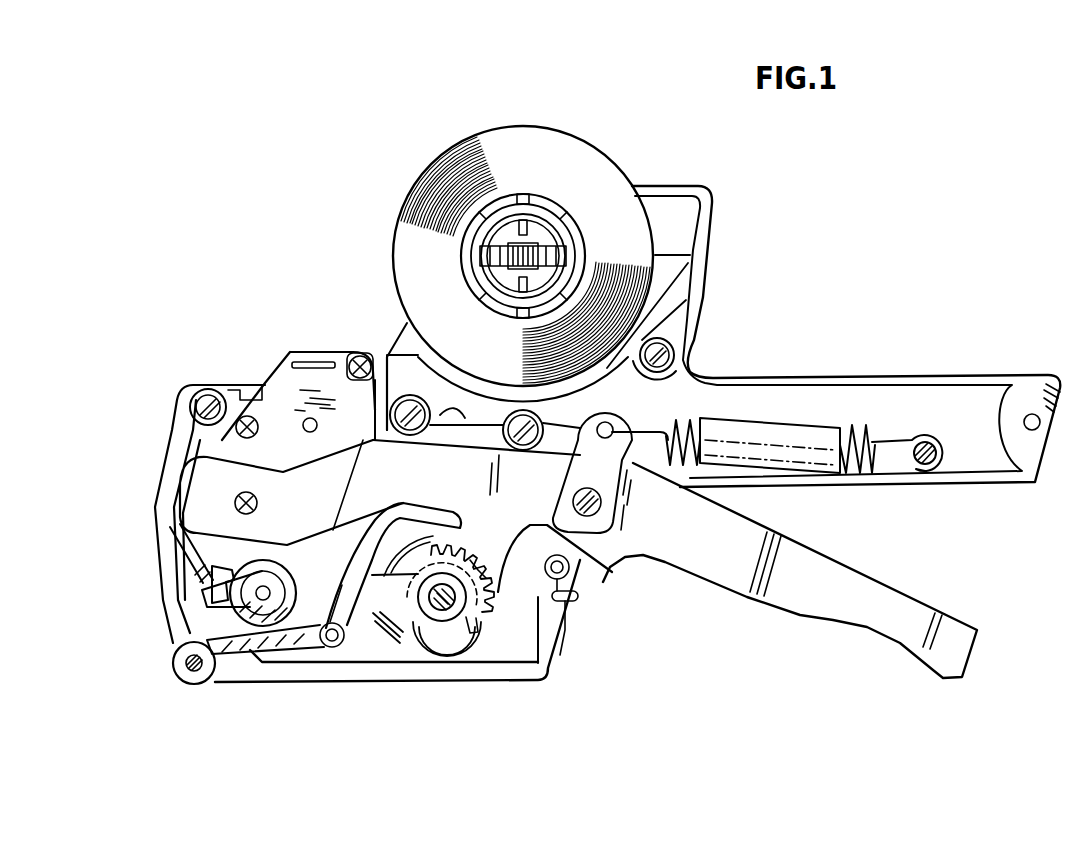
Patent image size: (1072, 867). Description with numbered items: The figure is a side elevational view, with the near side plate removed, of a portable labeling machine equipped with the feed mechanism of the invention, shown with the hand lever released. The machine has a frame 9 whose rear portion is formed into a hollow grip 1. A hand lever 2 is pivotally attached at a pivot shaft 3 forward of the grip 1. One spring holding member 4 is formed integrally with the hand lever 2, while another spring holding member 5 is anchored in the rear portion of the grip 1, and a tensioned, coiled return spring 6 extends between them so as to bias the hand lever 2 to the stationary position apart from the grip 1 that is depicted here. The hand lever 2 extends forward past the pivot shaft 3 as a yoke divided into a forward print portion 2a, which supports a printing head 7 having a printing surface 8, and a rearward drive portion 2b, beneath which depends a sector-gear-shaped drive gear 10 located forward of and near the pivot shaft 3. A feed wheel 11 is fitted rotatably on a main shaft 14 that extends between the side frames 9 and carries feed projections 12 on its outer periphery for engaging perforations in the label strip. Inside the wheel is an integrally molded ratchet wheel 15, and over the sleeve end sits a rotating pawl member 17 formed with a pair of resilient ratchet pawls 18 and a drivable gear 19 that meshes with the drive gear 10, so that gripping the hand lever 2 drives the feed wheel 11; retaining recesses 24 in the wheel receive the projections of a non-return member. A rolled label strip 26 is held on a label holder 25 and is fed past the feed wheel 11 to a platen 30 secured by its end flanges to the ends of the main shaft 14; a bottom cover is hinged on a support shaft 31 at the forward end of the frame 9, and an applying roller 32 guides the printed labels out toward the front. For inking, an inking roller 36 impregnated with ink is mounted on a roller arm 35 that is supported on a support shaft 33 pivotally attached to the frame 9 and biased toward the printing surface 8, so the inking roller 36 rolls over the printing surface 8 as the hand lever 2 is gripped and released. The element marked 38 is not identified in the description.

The hollow grip 1 is at (920, 375).
The hand lever 2 is at (865, 585).
The print portion 2a is at (279, 514).
The drive portion 2b is at (472, 516).
The pivot shaft 3 is at (597, 560).
The spring holding member 4 is at (617, 432).
The spring holding member 5 is at (935, 445).
The return spring 6 is at (770, 418).
The printing head 7 is at (303, 350).
The printing surface 8 is at (250, 562).
The frame 9 is at (242, 386).
The drive gear 10 is at (468, 542).
The feed wheel 11 is at (410, 595).
The feed projections 12 is at (357, 552).
The main shaft 14 is at (437, 613).
The ratchet wheel 15 is at (478, 632).
The rotating pawl member 17 is at (440, 545).
The ratchet pawls 18 is at (397, 502).
The drivable gear 19 is at (475, 565).
The retaining recesses 24 is at (380, 670).
The label holder 25 is at (545, 230).
The rolled label strip 26 is at (570, 150).
The platen 30 is at (305, 656).
The support shaft 31 is at (195, 684).
The applying roller 32 is at (174, 652).
The support shaft 33 is at (202, 388).
The roller arm 35 is at (183, 545).
The inking roller 36 is at (288, 586).
The stop 38 is at (560, 628).